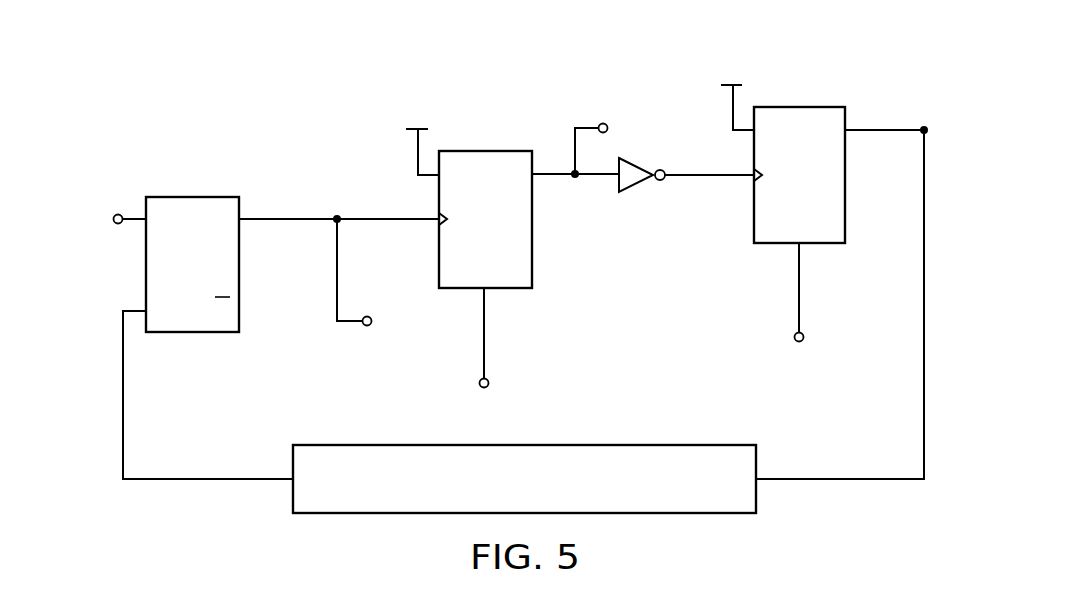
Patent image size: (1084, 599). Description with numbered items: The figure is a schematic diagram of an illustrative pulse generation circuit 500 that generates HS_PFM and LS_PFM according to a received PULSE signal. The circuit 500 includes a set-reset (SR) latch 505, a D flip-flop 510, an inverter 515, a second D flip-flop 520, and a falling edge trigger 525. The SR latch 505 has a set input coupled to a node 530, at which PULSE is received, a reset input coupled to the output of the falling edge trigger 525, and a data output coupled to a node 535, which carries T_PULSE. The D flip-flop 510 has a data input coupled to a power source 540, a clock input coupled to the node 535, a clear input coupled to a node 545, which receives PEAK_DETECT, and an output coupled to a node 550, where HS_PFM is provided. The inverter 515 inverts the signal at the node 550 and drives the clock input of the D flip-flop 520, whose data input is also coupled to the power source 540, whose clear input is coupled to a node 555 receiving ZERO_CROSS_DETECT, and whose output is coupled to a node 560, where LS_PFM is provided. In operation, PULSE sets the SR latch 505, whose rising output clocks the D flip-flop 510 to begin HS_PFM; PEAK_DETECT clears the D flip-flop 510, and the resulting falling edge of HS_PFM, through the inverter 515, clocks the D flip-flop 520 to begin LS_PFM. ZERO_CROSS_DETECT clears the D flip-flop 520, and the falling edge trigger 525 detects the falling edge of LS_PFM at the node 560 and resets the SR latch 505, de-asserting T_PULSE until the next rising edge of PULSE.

The pulse generation circuit 500 is at (257, 66).
The set-reset (SR) latch 505 is at (192, 197).
The D flip-flop 510 is at (495, 151).
The inverter 515 is at (636, 185).
The D flip-flop 520 is at (812, 107).
The falling edge trigger 525 is at (588, 445).
The node 530 is at (116, 213).
The node 535 is at (365, 330).
The power source 540 is at (412, 129).
The node 545 is at (479, 383).
The node 550 is at (606, 118).
The node 555 is at (795, 336).
The node 560 is at (918, 134).